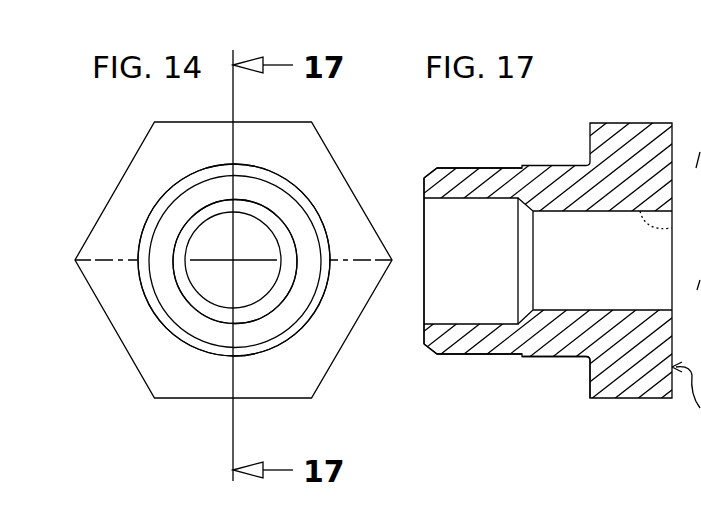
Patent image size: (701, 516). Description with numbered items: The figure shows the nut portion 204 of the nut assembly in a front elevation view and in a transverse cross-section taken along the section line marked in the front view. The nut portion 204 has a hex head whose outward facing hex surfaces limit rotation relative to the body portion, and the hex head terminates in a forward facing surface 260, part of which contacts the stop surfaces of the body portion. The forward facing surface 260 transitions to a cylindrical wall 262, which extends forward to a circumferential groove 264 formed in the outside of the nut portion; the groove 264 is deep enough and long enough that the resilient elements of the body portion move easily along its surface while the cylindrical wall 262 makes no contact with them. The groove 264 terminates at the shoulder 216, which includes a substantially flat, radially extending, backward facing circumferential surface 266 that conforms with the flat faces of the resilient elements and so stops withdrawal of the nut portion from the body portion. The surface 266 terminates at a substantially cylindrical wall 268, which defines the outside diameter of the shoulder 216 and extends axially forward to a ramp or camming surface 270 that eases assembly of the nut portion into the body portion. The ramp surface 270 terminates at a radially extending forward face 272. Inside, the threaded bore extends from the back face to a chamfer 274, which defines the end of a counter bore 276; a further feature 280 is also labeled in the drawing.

In FIG. 14, the nut portion 204 is at (107, 143).
In FIG. 17, the nut portion 204 is at (540, 123).
In FIG. 14, the shoulder 216 is at (263, 357).
In FIG. 17, the shoulder 216 is at (428, 358).
In FIG. 14, the forward facing surface 260 is at (144, 356).
In FIG. 17, the forward facing surface 260 is at (590, 368).
In FIG. 17, the cylindrical wall 262 is at (553, 358).
In FIG. 17, the circumferential groove 264 is at (488, 357).
In FIG. 17, the backward facing circumferential surface 266 is at (446, 167).
In FIG. 14, the cylindrical wall 268 is at (143, 295).
In FIG. 17, the cylindrical wall 268 is at (443, 165).
In FIG. 14, the ramp surface 270 is at (158, 311).
In FIG. 17, the ramp surface 270 is at (430, 354).
In FIG. 14, the forward face 272 is at (163, 233).
In FIG. 17, the forward face 272 is at (425, 197).
In FIG. 14, the chamfer 274 is at (247, 207).
In FIG. 17, the chamfer 274 is at (525, 222).
In FIG. 14, the counter bore 276 is at (200, 213).
In FIG. 17, the counter bore 276 is at (443, 297).
In FIG. 14, the bore 280 is at (198, 283).